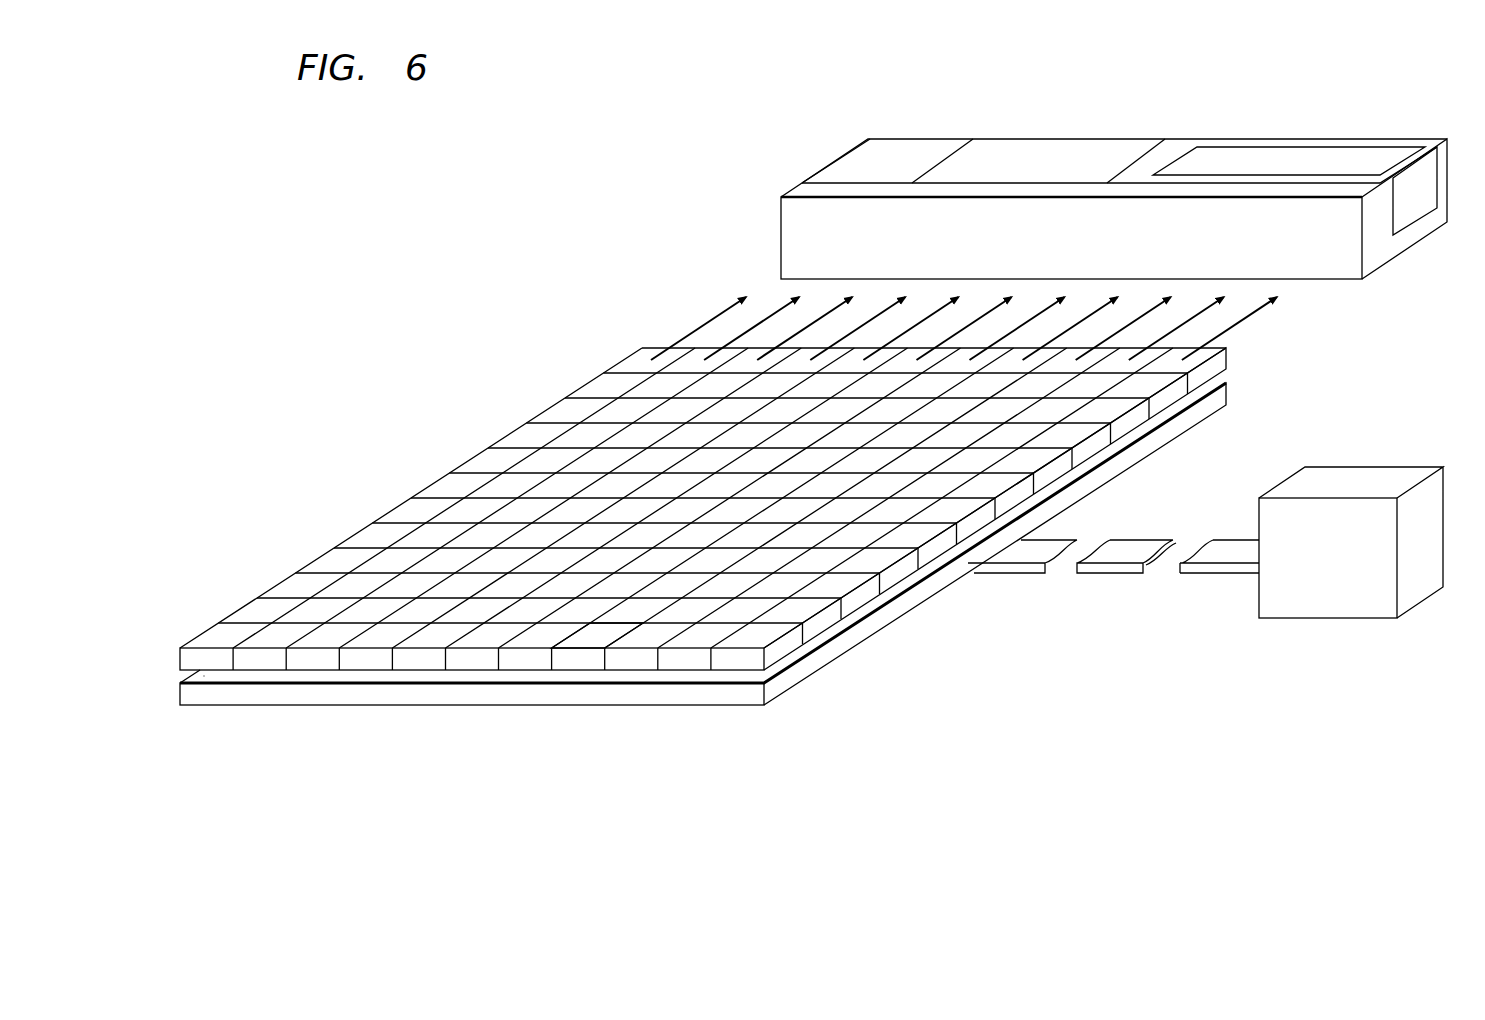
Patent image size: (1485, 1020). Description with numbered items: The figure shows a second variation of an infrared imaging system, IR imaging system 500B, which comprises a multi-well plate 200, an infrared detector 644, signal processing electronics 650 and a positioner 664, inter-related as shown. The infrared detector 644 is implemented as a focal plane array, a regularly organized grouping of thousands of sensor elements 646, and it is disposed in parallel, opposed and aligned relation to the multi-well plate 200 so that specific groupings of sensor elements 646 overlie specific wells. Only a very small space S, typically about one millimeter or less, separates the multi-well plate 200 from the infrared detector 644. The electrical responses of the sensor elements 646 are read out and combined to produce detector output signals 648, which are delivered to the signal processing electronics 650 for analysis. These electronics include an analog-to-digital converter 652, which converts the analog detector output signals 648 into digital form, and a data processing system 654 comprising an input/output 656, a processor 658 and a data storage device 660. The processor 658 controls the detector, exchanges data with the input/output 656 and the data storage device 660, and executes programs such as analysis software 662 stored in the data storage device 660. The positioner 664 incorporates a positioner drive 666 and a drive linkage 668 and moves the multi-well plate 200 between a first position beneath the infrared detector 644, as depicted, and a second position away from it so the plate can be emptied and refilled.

The IR imaging system 500B is at (340, 273).
The infrared detector 644 is at (383, 503).
The sensor elements 646 is at (592, 638).
The multi-well plate 200 is at (323, 698).
The space S is at (203, 674).
The detector output signals 648 is at (1280, 332).
The signal processing electronics 650 is at (625, 168).
The analog-to-digital converter 652 is at (792, 233).
The data processing system 654 is at (762, 150).
The input/output 656 is at (933, 147).
The processor 658 is at (1053, 147).
The data storage device 660 is at (1178, 147).
The analysis software 662 is at (1410, 202).
The positioner 664 is at (1223, 497).
The drive linkage 668 is at (1133, 547).
The positioner drive 666 is at (1327, 618).